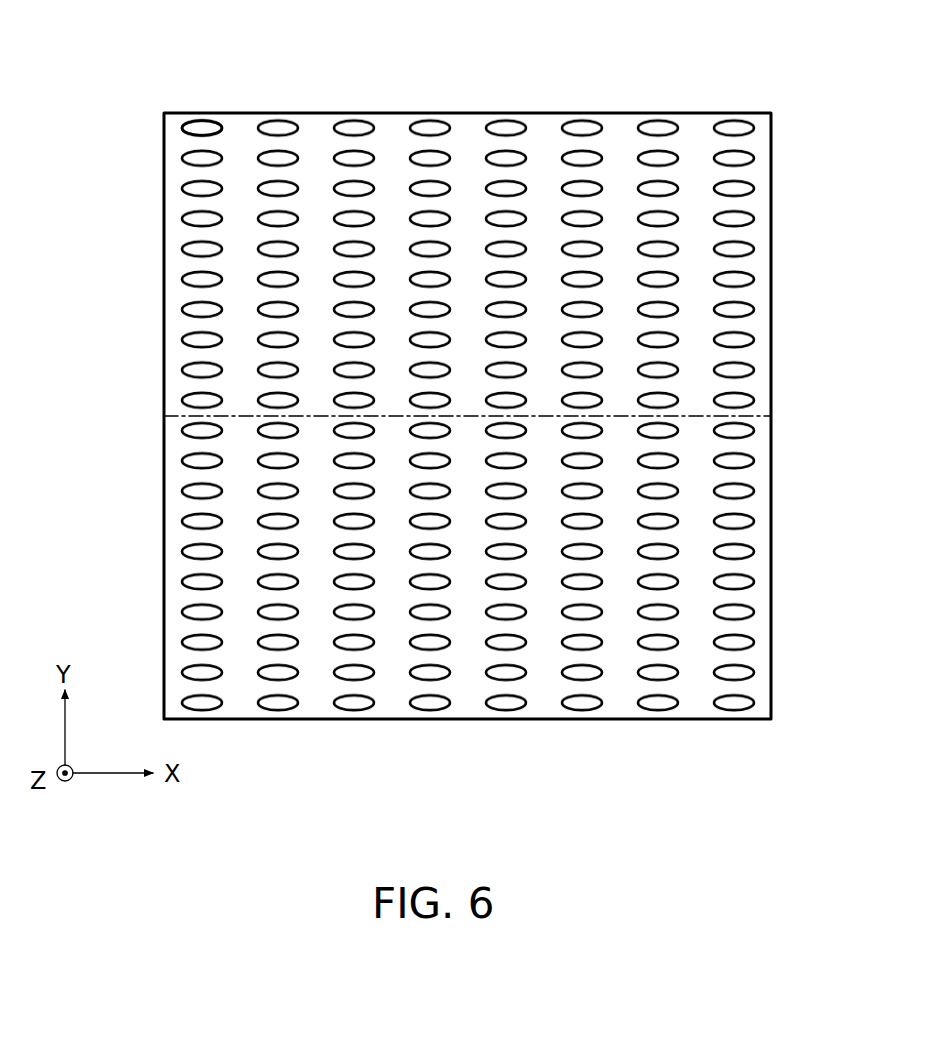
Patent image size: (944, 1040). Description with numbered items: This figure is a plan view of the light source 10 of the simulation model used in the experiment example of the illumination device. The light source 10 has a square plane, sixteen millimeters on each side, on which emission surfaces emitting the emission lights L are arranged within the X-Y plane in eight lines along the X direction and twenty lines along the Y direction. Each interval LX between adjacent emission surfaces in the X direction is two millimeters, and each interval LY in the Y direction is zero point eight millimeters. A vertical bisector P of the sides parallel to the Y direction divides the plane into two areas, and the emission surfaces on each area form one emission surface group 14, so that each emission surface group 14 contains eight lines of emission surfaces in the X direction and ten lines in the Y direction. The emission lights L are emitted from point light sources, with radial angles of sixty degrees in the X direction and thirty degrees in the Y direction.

The light source 10 is at (773, 75).
The emission surface group 14 is at (787, 117).
The emission light L is at (188, 126).
The interval between emission surfaces in the X direction LX is at (277, 100).
The interval between emission surfaces in the Y direction LY is at (172, 128).
The vertical bisector P is at (175, 413).